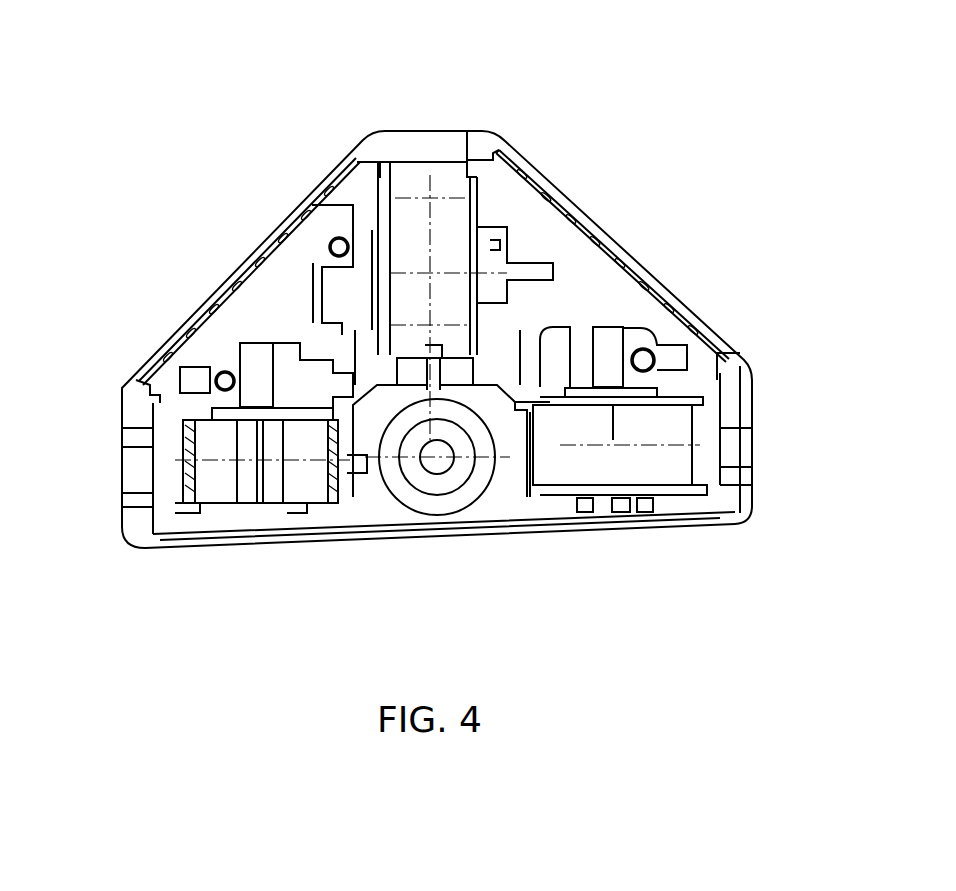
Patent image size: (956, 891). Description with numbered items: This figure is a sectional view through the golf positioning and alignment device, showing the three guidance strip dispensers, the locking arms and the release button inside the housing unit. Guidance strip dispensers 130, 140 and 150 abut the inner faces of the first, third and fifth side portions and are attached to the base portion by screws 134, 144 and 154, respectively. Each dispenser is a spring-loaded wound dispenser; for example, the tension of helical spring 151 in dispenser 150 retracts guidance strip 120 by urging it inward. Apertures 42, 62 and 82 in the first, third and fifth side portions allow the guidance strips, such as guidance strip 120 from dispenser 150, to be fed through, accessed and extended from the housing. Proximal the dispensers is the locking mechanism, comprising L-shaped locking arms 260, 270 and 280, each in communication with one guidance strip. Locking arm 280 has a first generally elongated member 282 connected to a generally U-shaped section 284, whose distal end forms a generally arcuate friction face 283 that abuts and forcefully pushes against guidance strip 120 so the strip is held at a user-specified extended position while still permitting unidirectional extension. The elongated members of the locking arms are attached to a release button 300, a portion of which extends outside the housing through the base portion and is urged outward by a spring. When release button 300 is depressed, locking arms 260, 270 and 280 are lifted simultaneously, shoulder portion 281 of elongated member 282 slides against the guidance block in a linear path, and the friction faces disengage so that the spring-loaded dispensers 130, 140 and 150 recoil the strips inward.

The aperture 42 is at (120, 471).
The aperture 62 is at (753, 440).
The aperture 82 is at (423, 128).
The guidance strip 120 is at (443, 182).
The guidance strip dispenser 130 is at (223, 493).
The screw 134 is at (218, 378).
The guidance strip dispenser 140 is at (667, 465).
The screw 144 is at (330, 240).
The guidance strip dispenser 150 is at (447, 245).
The helical spring 151 is at (403, 232).
The screw 154 is at (655, 352).
The locking arm 260 is at (357, 458).
The locking arm 270 is at (524, 453).
The locking arm 280 is at (427, 350).
The shoulder portion 281 is at (445, 388).
The first generally elongated member 282 is at (437, 368).
The generally arcuate friction face 283 is at (428, 352).
The generally U-shaped section 284 is at (440, 355).
The release button 300 is at (437, 463).